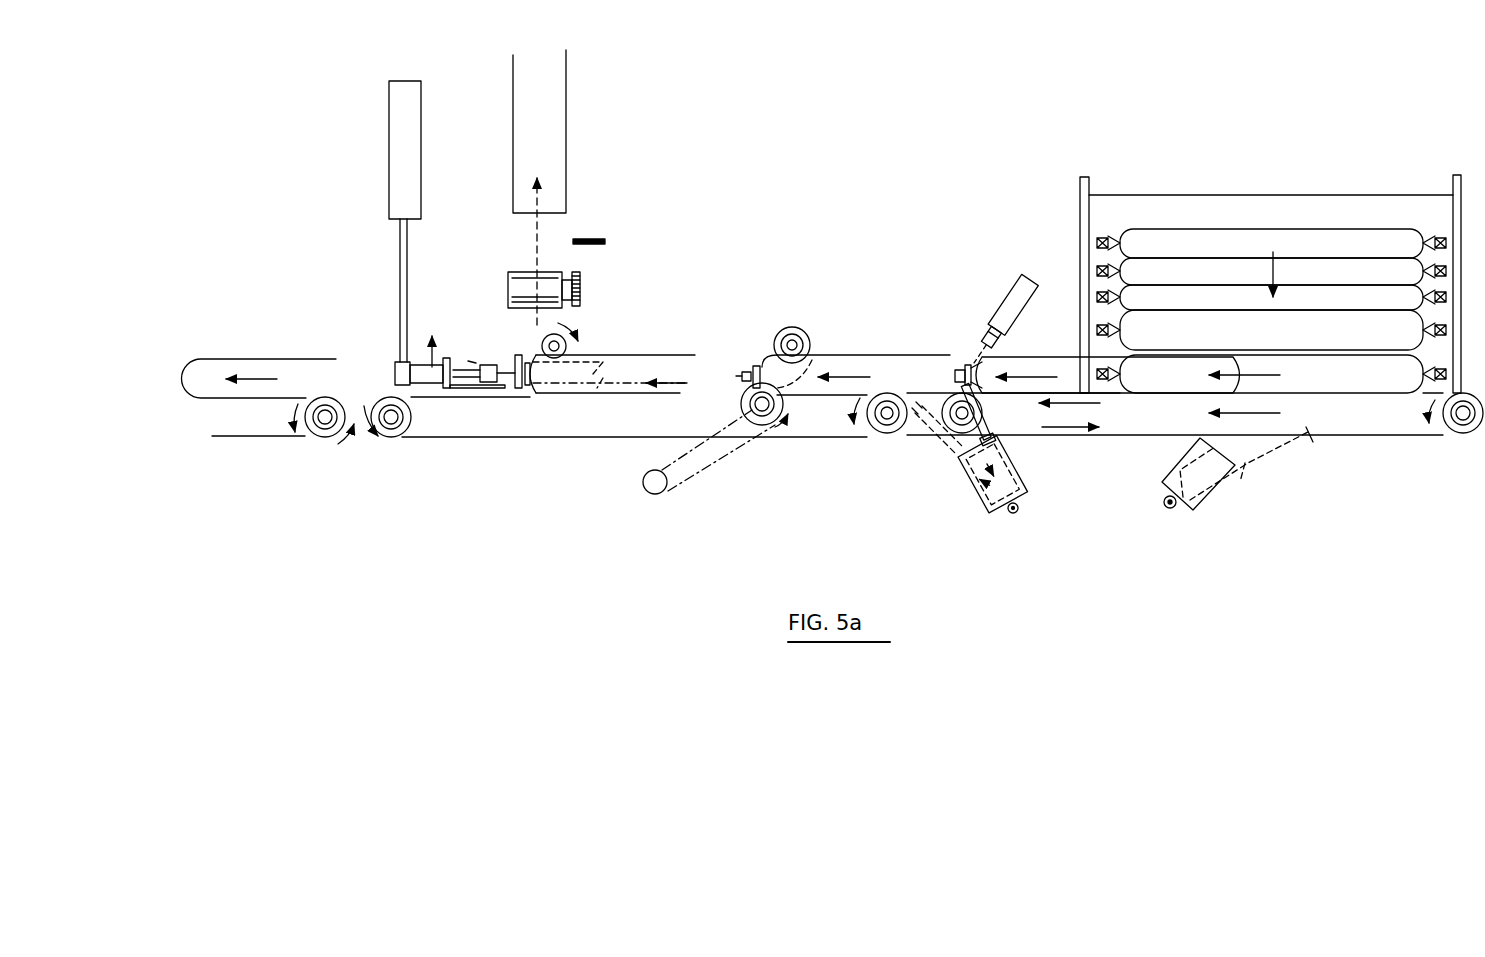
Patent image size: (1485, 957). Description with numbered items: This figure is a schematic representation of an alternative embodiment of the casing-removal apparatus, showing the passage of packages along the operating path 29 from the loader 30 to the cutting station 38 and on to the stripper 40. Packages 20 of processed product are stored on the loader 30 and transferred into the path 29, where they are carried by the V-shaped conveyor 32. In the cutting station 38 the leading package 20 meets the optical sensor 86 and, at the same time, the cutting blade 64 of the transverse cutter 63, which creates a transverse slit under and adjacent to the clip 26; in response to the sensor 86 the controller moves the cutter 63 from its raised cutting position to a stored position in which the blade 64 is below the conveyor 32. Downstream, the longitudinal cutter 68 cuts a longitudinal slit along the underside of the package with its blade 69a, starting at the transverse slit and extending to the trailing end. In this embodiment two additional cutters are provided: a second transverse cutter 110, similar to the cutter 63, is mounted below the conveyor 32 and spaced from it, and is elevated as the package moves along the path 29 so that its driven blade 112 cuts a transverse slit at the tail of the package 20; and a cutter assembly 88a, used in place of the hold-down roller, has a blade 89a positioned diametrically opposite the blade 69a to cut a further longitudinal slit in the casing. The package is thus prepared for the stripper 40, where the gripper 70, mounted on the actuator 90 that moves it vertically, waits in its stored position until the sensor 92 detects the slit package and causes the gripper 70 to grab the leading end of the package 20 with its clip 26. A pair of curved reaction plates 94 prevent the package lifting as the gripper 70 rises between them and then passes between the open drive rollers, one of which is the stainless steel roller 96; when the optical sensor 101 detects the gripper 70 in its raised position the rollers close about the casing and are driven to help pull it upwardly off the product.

The package 20 is at (1005, 365).
The clip 26 is at (970, 363).
The operating path 29 is at (1270, 401).
The loader 30 is at (1302, 126).
The V-shaped conveyor 32 is at (1468, 440).
The cutting station 38 is at (947, 190).
The stripper 40 is at (608, 156).
The transverse cutter 63 is at (935, 478).
The cutting blade 64 is at (957, 375).
The longitudinal cutter 68 is at (685, 488).
The blade 69a is at (764, 425).
The gripper 70 is at (437, 388).
The optical sensor 86 is at (1007, 300).
The cutter assembly 88a is at (812, 338).
The blade 89a is at (778, 335).
The actuator 90 is at (389, 137).
The sensor 92 is at (573, 357).
The curved reaction plates 94 is at (612, 363).
The drive roller 96 is at (520, 288).
The optical sensor 101 is at (598, 233).
The transverse cutter 110 is at (1237, 497).
The driven blade 112 is at (1313, 440).